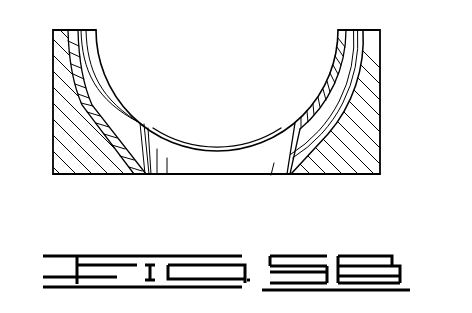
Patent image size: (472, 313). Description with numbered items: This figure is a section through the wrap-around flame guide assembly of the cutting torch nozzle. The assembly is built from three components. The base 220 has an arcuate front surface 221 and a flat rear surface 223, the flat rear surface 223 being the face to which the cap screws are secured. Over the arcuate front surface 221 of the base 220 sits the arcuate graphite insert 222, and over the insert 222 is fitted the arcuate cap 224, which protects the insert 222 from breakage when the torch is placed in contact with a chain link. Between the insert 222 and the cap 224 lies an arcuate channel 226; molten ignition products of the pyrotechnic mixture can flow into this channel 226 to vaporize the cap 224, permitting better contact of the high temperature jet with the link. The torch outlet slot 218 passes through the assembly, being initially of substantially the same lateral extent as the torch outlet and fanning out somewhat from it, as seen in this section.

The torch outlet slot 218 is at (275, 163).
The base 220 is at (352, 140).
The arcuate front surface 221 is at (90, 105).
The arcuate graphite insert 222 is at (367, 63).
The flat rear surface 223 is at (93, 175).
The arcuate cap 224 is at (326, 95).
The arcuate channel 226 is at (86, 58).